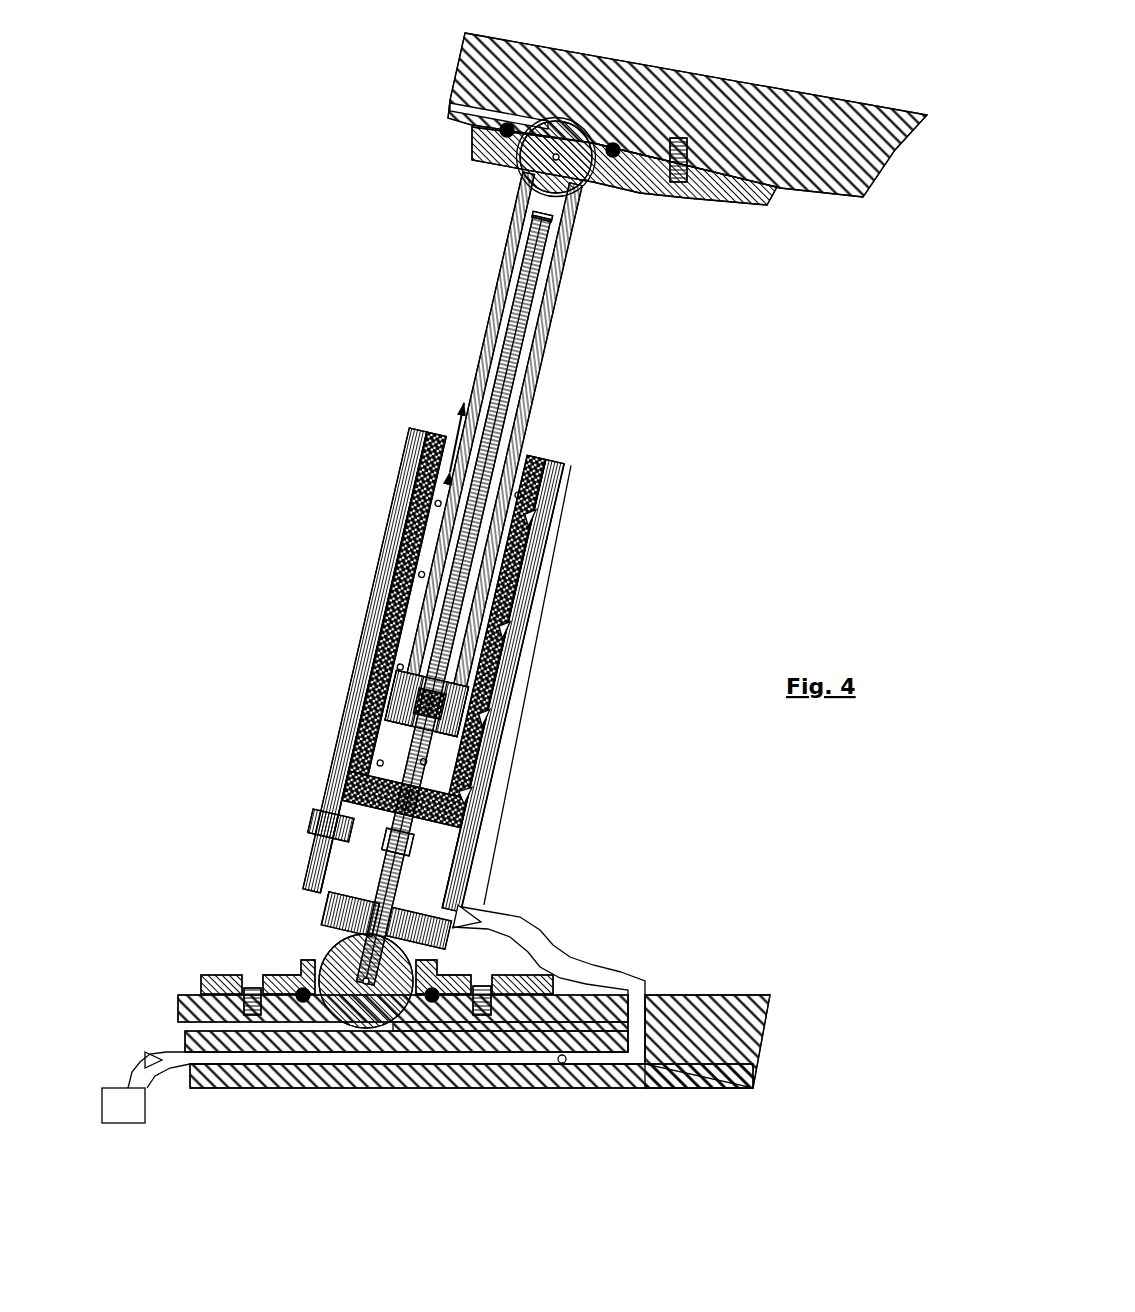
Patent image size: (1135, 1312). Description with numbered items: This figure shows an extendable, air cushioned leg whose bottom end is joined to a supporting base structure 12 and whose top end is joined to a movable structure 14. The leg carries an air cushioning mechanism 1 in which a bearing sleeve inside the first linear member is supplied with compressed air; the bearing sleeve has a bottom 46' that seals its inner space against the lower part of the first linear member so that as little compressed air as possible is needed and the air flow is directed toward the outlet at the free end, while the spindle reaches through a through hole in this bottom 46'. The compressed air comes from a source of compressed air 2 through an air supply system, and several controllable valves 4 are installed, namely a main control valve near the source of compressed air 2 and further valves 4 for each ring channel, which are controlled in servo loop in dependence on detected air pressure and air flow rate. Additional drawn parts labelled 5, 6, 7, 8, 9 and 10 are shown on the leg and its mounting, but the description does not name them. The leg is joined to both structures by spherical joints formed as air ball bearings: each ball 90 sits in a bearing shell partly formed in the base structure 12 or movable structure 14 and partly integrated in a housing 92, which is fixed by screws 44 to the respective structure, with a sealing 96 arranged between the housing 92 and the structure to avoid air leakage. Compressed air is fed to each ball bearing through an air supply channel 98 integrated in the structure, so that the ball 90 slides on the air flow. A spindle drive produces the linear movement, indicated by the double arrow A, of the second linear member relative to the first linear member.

The air cushioning mechanism 1 is at (622, 548).
The source of compressed air 2 is at (487, 328).
The controllable valves 4 is at (149, 1058).
The threaded spindle 5 is at (548, 170).
The bottom plate 6 is at (507, 800).
The hose / line 7 is at (277, 1147).
The inner tube 8 is at (497, 290).
The clamping block 9 is at (388, 1147).
The lower housing part 10 is at (330, 958).
The supporting base structure 12 is at (680, 1022).
The movable structure 14 is at (838, 160).
The screw 44 is at (683, 150).
The bottom of the bearing sleeve 46' is at (311, 785).
The ball 90 is at (561, 128).
The housing 92 is at (760, 177).
The sealing 96 is at (615, 148).
The air supply channel 98 is at (455, 105).
The double arrow A is at (447, 425).